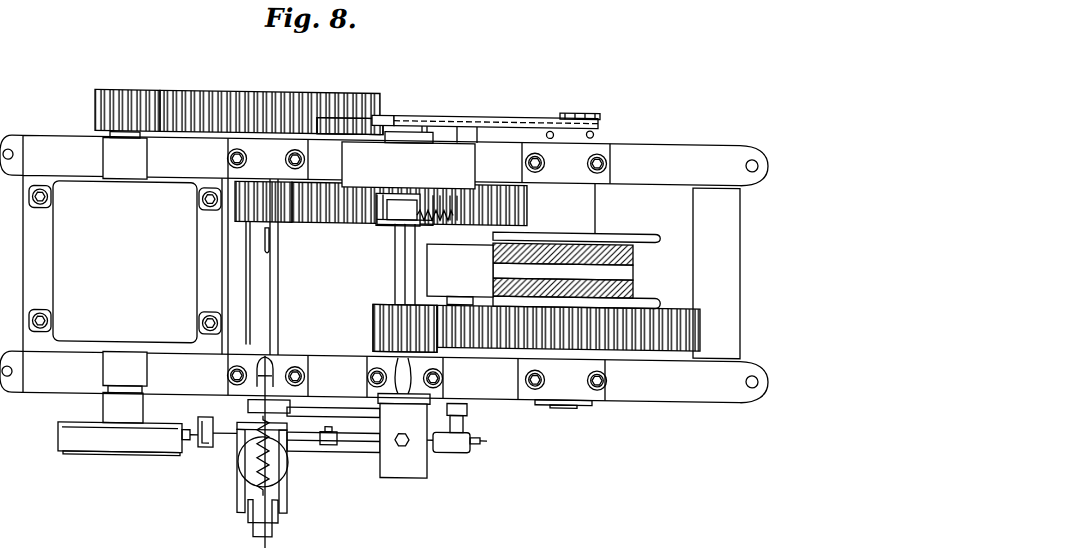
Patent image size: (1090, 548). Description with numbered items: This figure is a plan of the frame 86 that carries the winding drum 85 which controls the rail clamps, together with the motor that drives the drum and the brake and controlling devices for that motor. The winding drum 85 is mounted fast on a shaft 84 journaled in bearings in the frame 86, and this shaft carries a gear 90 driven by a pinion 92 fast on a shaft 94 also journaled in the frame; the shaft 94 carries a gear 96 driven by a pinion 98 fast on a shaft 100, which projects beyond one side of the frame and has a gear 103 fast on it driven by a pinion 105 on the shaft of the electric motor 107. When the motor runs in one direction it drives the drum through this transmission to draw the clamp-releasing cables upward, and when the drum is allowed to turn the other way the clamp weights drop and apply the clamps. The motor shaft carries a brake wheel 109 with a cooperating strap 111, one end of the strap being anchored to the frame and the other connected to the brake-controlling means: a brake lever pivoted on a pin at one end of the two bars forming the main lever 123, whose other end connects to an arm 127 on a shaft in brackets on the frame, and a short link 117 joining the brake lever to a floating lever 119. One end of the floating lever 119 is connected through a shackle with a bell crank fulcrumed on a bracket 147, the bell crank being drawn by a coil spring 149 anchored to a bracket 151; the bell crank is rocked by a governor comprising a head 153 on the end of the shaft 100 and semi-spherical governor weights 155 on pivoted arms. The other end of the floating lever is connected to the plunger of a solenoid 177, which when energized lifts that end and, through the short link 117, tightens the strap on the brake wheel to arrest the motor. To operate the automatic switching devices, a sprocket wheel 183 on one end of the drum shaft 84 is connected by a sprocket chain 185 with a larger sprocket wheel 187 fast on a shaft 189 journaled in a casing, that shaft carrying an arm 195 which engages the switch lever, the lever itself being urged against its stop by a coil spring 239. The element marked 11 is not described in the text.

The control rod 11 is at (255, 359).
The shaft 84 is at (565, 402).
The winding drum 85 is at (618, 224).
The frame 86 is at (657, 381).
The gear 90 is at (695, 310).
The pinion 92 is at (377, 321).
The shaft 94 is at (395, 267).
The gear 96 is at (342, 207).
The pinion 98 is at (282, 209).
The shaft 100 is at (270, 279).
The gear 103 is at (303, 99).
The pinion 105 is at (97, 101).
The electric motor 107 is at (77, 189).
The brake wheel 109 is at (98, 454).
The strap 111 is at (157, 436).
The short link 117 is at (335, 445).
The floating lever 119 is at (312, 446).
The main lever 123 is at (433, 451).
The arm 127 is at (442, 444).
The bracket 147 is at (238, 503).
The coil spring 149 is at (240, 469).
The bracket 151 is at (270, 383).
The head 153 is at (285, 406).
The governor weight 155 is at (253, 466).
The solenoid 177 is at (395, 447).
The sprocket wheel 183 is at (583, 114).
The sprocket chain 185 is at (463, 111).
The sprocket wheel 187 is at (338, 118).
The shaft 189 is at (383, 117).
The arm 195 is at (365, 184).
The coil spring 239 is at (433, 193).